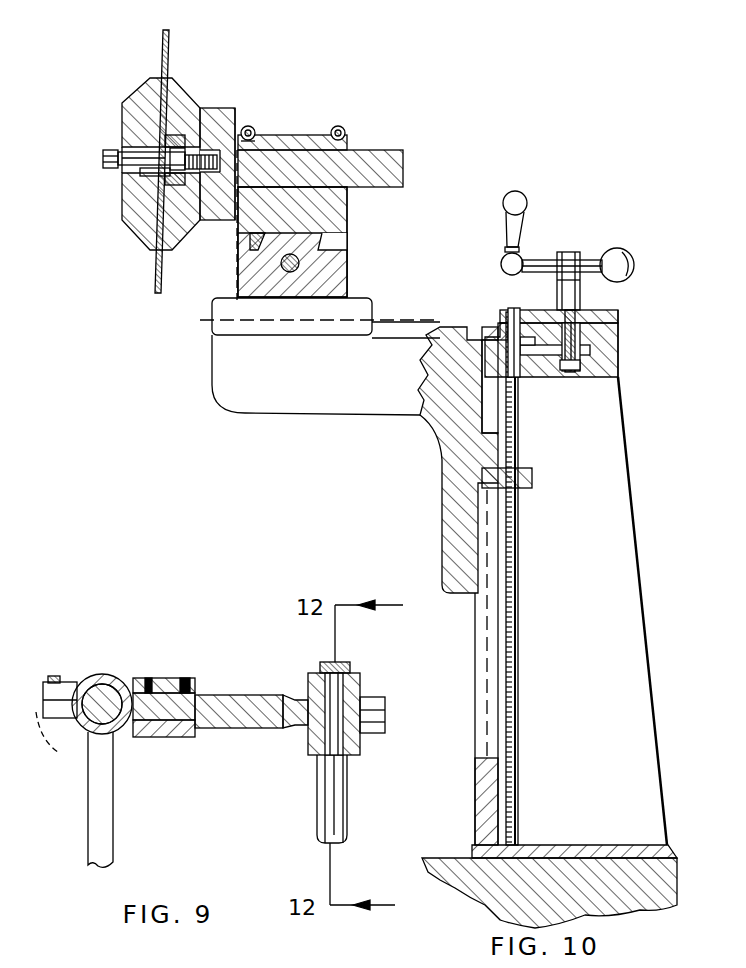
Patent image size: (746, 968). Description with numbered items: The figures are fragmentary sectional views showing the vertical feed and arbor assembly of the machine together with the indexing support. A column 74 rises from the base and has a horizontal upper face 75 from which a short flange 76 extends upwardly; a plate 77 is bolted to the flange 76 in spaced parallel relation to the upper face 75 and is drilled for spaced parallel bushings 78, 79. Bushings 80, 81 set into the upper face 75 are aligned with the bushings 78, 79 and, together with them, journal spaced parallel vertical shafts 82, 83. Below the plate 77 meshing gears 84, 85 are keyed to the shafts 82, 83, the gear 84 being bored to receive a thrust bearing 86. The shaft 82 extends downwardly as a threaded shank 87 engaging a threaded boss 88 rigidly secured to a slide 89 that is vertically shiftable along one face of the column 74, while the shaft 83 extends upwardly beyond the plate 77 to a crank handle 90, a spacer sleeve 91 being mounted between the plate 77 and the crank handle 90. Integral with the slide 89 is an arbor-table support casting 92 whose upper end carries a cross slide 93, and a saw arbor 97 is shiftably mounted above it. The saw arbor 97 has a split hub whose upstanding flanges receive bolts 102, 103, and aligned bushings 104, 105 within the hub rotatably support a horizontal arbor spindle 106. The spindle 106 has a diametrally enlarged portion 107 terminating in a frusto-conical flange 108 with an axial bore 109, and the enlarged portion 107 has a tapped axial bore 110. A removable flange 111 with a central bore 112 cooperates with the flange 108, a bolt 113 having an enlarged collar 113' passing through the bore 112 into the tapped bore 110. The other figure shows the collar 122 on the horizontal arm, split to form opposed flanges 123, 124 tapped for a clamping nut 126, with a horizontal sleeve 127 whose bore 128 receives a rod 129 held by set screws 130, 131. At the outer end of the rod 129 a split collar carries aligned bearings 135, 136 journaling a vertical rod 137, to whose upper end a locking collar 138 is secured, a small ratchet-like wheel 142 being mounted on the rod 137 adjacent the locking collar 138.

In FIG. 10, the column 74 is at (476, 795).
In FIG. 10, the horizontal upper face 75 is at (607, 380).
In FIG. 10, the short flange 76 is at (618, 332).
In FIG. 10, the plate 77 is at (603, 313).
In FIG. 10, the bushing 78 is at (503, 320).
In FIG. 10, the bushing 79 is at (582, 310).
In FIG. 10, the bushing 80 is at (530, 372).
In FIG. 10, the bushing 81 is at (595, 367).
In FIG. 10, the vertical shaft 82 is at (514, 310).
In FIG. 10, the vertical shaft 83 is at (590, 350).
In FIG. 10, the gear 84 is at (490, 330).
In FIG. 10, the gear 85 is at (618, 327).
In FIG. 10, the thrust bearing 86 is at (437, 417).
In FIG. 10, the threaded shank 87 is at (518, 613).
In FIG. 10, the threaded boss 88 is at (532, 478).
In FIG. 10, the slide 89 is at (482, 465).
In FIG. 10, the crank handle 90 is at (527, 227).
In FIG. 10, the spacer sleeve 91 is at (557, 296).
In FIG. 10, the arbor-table support casting 92 is at (300, 415).
In FIG. 10, the cross slide 93 is at (212, 312).
In FIG. 10, the saw arbor 97 is at (348, 210).
In FIG. 10, the bolt 102 is at (255, 128).
In FIG. 10, the bolt 103 is at (345, 128).
In FIG. 10, the bushing 104 is at (248, 126).
In FIG. 10, the bushing 105 is at (355, 140).
In FIG. 10, the arbor spindle 106 is at (403, 166).
In FIG. 10, the diametrally enlarged portion 107 is at (222, 125).
In FIG. 10, the frusto-conical flange 108 is at (178, 243).
In FIG. 10, the axial bore 109 is at (176, 135).
In FIG. 10, the tapped axial bore 110 is at (226, 222).
In FIG. 10, the removable flange 111 is at (128, 222).
In FIG. 10, the central bore 112 is at (140, 130).
In FIG. 10, the bolt 113 is at (143, 127).
In FIG. 10, the enlarged collar 113' is at (116, 198).
In FIG. 9, the collar 122 is at (112, 668).
In FIG. 9, the flange 123 is at (47, 680).
In FIG. 9, the flange 124 is at (74, 789).
In FIG. 9, the clamping nut 126 is at (60, 678).
In FIG. 9, the horizontal sleeve 127 is at (138, 740).
In FIG. 9, the bore 128 is at (200, 720).
In FIG. 9, the rod 129 is at (228, 700).
In FIG. 9, the set screw 130 is at (150, 678).
In FIG. 9, the set screw 131 is at (186, 678).
In FIG. 9, the bearing 135 is at (385, 700).
In FIG. 9, the bearing 136 is at (337, 762).
In FIG. 9, the vertical rod 137 is at (347, 800).
In FIG. 9, the locking collar 138 is at (338, 664).
In FIG. 9, the ratchet-like wheel 142 is at (350, 680).